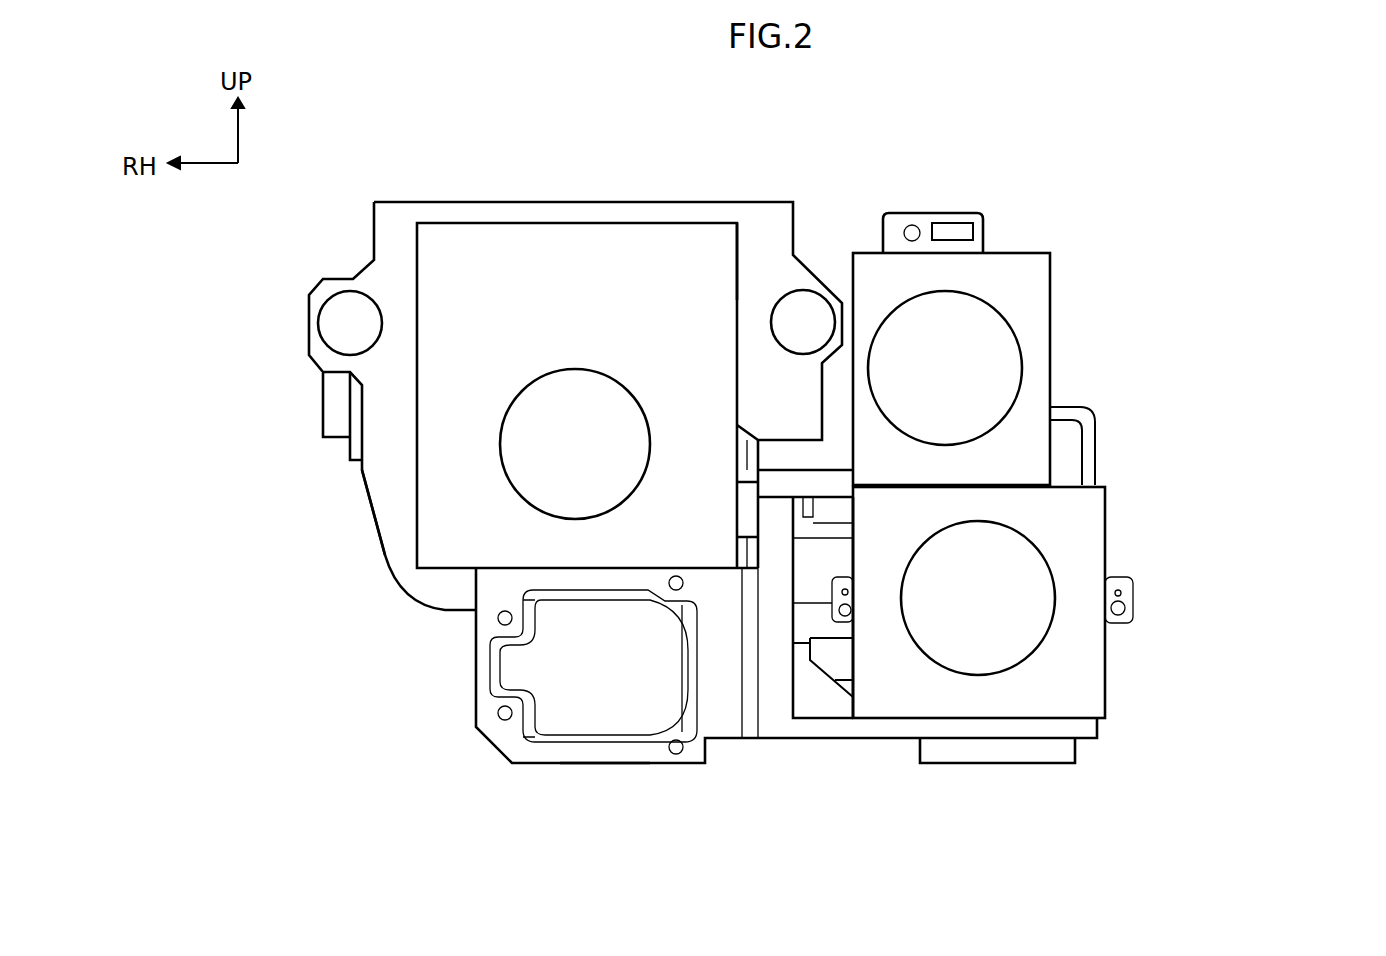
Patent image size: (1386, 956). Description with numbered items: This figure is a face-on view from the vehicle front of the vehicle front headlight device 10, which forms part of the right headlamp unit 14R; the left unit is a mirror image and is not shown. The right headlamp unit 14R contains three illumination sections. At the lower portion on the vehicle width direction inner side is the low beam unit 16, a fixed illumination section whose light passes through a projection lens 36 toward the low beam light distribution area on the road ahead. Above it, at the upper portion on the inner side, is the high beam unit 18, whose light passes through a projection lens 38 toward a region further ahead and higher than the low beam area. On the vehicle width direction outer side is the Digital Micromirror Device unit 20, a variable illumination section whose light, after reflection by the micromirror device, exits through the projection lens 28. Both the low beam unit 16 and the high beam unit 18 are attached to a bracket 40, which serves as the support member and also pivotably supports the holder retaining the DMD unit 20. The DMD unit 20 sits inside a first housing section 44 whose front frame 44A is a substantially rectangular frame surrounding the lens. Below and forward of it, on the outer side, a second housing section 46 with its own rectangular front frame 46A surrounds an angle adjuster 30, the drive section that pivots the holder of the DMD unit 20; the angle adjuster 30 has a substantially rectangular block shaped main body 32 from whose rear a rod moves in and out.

The vehicle front headlight device 10 is at (445, 632).
The right headlamp unit 14R is at (1104, 437).
The low beam unit 16 is at (1060, 535).
The high beam unit 18 is at (1025, 347).
The Digital Micromirror Device (DMD) unit 20 is at (413, 512).
The projection lens 28 is at (550, 405).
The angle adjuster 30 is at (582, 720).
The main body 32 is at (640, 707).
The projection lens 36 is at (1008, 647).
The projection lens 38 is at (977, 310).
The bracket 40 is at (374, 200).
The first housing section 44 is at (582, 200).
The front frame 44A is at (755, 218).
The second housing section 46 is at (498, 753).
The front frame 46A is at (600, 752).